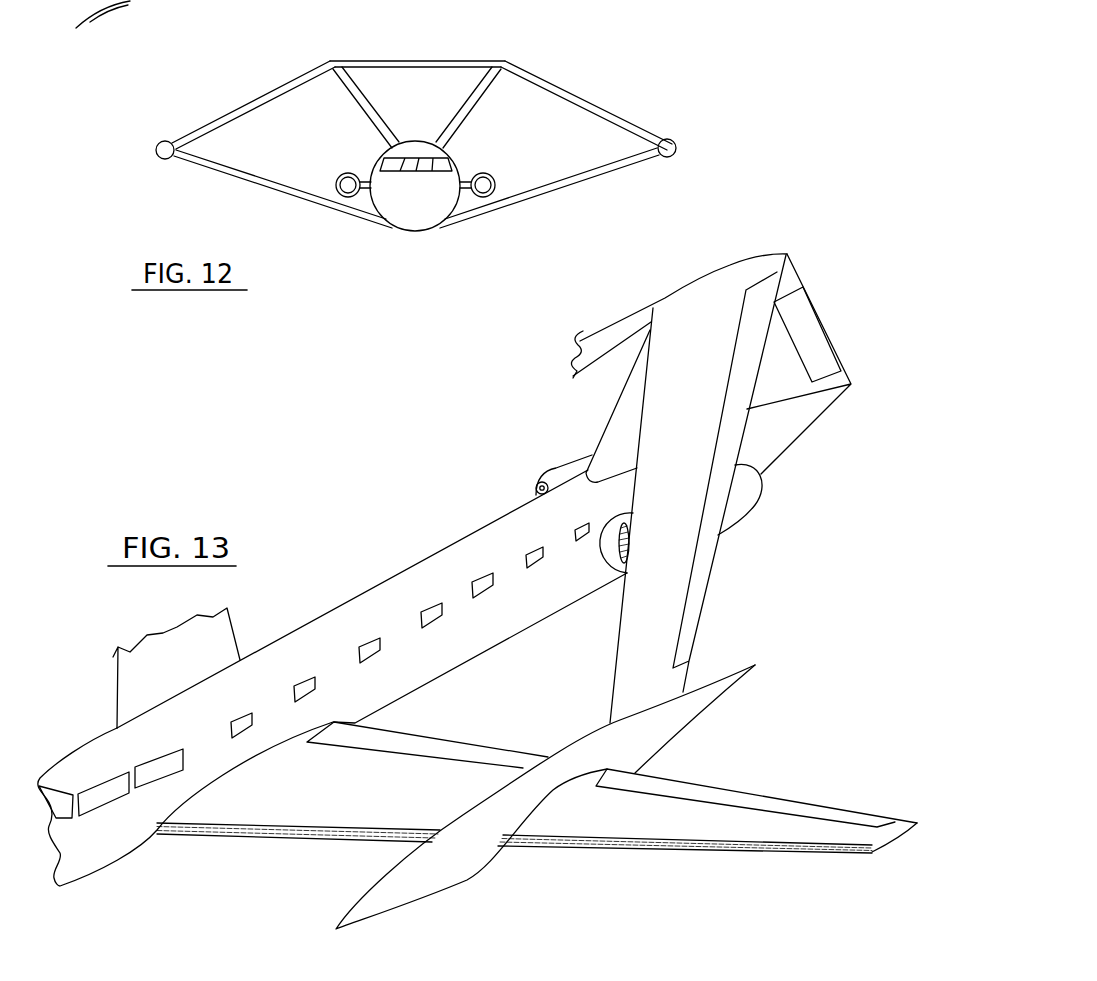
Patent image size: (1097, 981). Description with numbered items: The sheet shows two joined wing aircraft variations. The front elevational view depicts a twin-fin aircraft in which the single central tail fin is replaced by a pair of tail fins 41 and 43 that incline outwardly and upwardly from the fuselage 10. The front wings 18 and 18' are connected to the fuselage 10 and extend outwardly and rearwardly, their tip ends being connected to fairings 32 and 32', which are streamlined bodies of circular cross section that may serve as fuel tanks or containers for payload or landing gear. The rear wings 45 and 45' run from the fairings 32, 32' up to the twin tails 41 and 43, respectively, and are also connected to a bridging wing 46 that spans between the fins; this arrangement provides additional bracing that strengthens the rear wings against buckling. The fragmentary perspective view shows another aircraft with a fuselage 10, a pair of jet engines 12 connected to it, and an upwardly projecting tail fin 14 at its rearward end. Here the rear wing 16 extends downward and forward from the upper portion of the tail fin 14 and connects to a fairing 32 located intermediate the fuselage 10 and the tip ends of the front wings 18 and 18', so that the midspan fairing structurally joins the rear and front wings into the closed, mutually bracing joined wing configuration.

In FIG. 12, the fuselage 10 is at (423, 218).
In FIG. 13, the fuselage 10 is at (402, 582).
In FIG. 13, the jet engine 12 is at (741, 500).
In FIG. 13, the tail fin 14 is at (613, 422).
In FIG. 13, the rear wing 16 is at (636, 617).
In FIG. 12, the front wing 18 is at (549, 188).
In FIG. 13, the front wing 18 is at (537, 806).
In FIG. 12, the front wing 18' is at (283, 194).
In FIG. 13, the front wing 18' is at (204, 652).
In FIG. 12, the fairing 32 is at (682, 125).
In FIG. 13, the fairing 32 is at (545, 797).
In FIG. 12, the fairing 32' is at (140, 127).
In FIG. 12, the tail fin 41 is at (352, 97).
In FIG. 12, the tail fin 43 is at (483, 96).
In FIG. 12, the rear wing 45 is at (253, 96).
In FIG. 12, the rear wing 45' is at (586, 95).
In FIG. 12, the bridging wing 46 is at (415, 61).